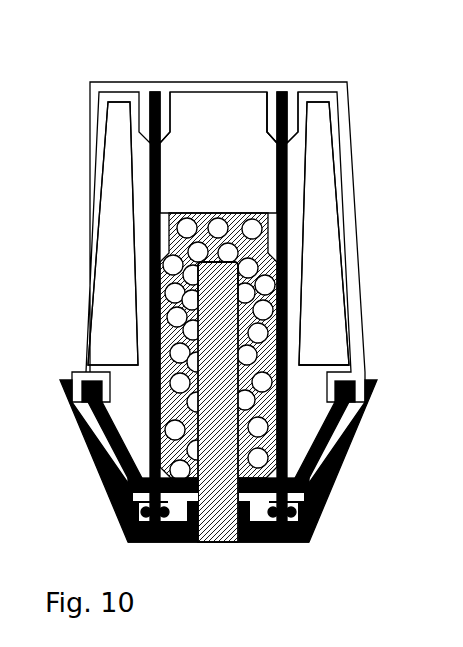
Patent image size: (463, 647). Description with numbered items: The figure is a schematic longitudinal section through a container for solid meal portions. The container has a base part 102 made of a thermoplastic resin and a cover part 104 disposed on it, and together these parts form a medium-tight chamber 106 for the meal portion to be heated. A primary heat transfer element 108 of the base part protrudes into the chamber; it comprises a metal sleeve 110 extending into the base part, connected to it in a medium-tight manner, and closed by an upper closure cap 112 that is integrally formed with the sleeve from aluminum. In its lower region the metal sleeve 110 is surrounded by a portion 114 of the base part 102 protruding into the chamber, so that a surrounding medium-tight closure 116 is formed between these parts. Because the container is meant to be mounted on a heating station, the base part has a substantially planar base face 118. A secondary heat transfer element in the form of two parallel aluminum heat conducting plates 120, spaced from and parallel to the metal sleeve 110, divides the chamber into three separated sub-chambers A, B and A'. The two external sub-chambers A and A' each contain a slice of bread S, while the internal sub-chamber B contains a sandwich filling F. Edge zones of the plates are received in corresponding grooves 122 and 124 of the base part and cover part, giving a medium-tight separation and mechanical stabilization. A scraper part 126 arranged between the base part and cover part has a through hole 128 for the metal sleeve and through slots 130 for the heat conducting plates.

The base part 102 is at (348, 455).
The cover part 104 is at (345, 113).
The medium-tight chamber 106 is at (232, 125).
The primary heat transfer element 108 is at (293, 331).
The metal sleeve 110 is at (218, 505).
The upper closure cap 112 is at (212, 262).
The portion of the base part 114 is at (195, 505).
The medium-tight closure 116 is at (238, 543).
The planar base face 118 is at (278, 535).
The heat conducting plates 120 is at (153, 193).
The grooves of the base part 122 is at (290, 520).
The grooves of the cover part 124 is at (290, 103).
The scraper part 126 is at (323, 447).
The through hole 128 is at (197, 473).
The through slots 130 is at (145, 488).
The external sub-chamber A is at (88, 227).
The external sub-chamber A' is at (361, 233).
The internal sub-chamber B is at (185, 120).
The sandwich filling F is at (237, 228).
The slice of bread S is at (117, 255).